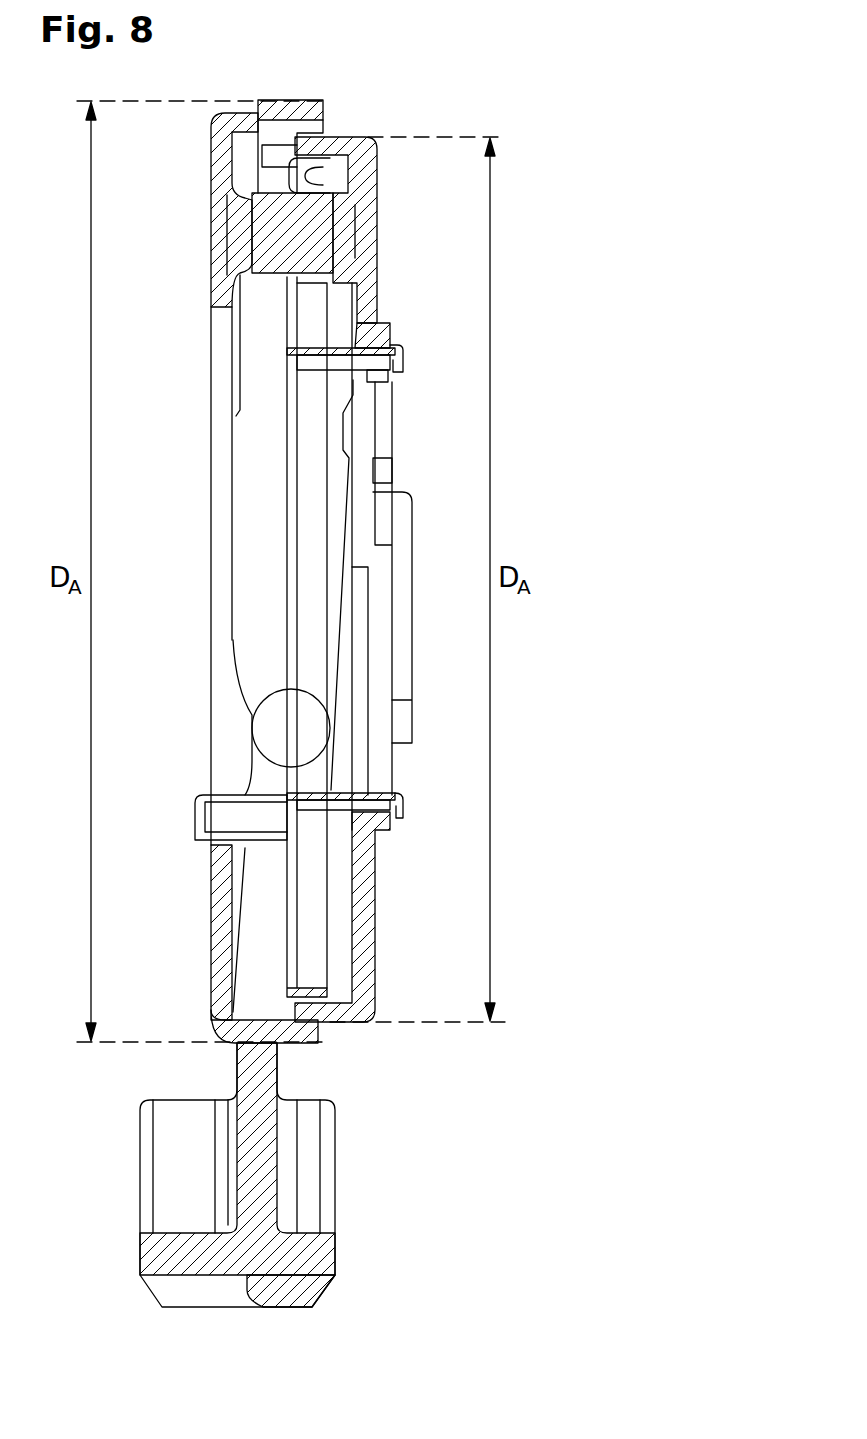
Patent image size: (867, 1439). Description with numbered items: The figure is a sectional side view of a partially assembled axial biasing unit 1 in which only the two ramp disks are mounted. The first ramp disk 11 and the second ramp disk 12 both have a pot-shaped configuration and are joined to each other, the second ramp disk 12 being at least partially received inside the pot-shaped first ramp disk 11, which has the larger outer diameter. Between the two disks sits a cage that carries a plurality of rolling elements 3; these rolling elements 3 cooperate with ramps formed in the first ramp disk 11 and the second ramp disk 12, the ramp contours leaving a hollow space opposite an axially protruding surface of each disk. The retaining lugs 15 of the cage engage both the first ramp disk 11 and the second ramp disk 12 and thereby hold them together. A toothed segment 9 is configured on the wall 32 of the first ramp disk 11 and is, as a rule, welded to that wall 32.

The axial biasing unit 1 is at (179, 493).
The rolling elements 3 is at (315, 232).
The toothed segment 9 is at (260, 1177).
The first ramp disk 11 is at (223, 946).
The second ramp disk 12 is at (362, 917).
The retaining lugs 15 is at (400, 360).
The wall 32 is at (290, 1046).